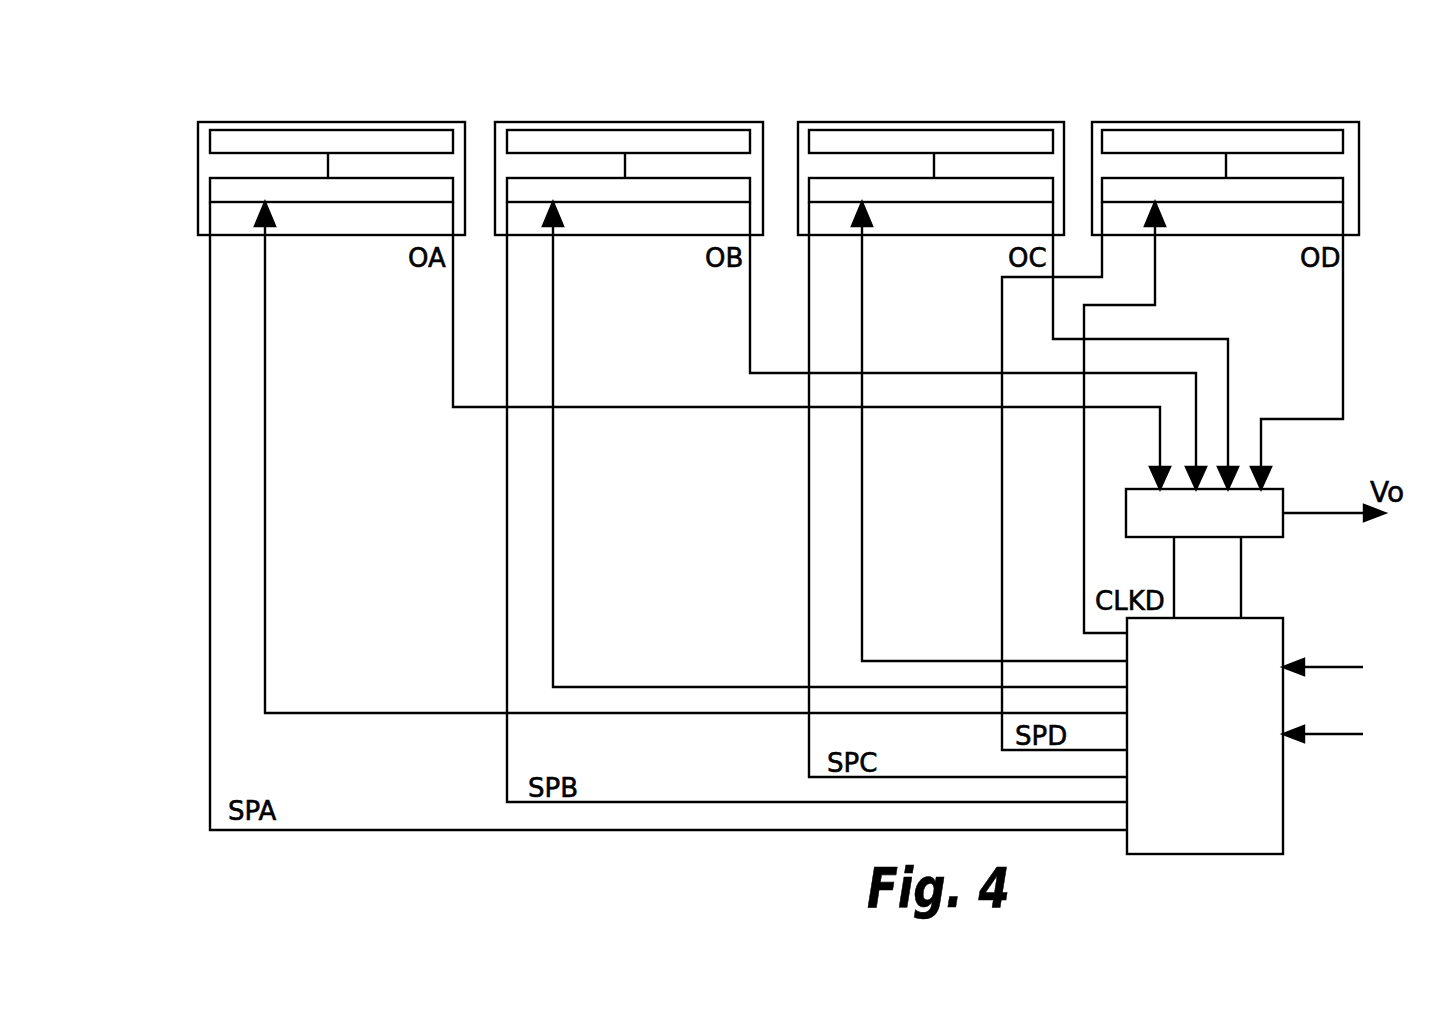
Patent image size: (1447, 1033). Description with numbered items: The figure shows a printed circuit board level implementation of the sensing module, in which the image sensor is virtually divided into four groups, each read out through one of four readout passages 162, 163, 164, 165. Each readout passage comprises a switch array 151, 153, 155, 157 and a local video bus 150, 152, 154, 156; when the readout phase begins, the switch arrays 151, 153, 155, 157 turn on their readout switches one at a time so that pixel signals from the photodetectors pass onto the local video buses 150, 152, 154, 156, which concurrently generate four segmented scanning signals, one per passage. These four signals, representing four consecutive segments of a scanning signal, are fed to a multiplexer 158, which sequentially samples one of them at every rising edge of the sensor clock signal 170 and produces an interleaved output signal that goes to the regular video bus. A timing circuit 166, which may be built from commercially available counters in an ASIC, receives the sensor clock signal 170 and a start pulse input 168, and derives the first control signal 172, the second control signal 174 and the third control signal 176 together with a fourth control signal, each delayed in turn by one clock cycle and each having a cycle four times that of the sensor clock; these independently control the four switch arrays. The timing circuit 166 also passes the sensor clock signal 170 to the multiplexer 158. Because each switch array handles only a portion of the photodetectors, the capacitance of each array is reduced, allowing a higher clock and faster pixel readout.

The local video bus 150 is at (330, 228).
The switch array 151 is at (313, 133).
The local video bus 152 is at (625, 228).
The switch array 153 is at (562, 133).
The local video bus 154 is at (945, 223).
The switch array 155 is at (850, 133).
The local video bus 156 is at (1242, 225).
The switch array 157 is at (1133, 133).
The multiplexer 158 is at (1270, 500).
The readout passage 162 is at (207, 166).
The readout passage 163 is at (498, 165).
The readout passage 164 is at (805, 166).
The readout passage 165 is at (1100, 165).
The timing circuit 166 is at (1260, 625).
The start pulse signal SP 168 is at (1368, 722).
The sensor clock signal 170 is at (1405, 655).
The control signal CLKA 172 is at (305, 682).
The control signal CLKB 174 is at (602, 655).
The control signal CLKC 176 is at (896, 628).